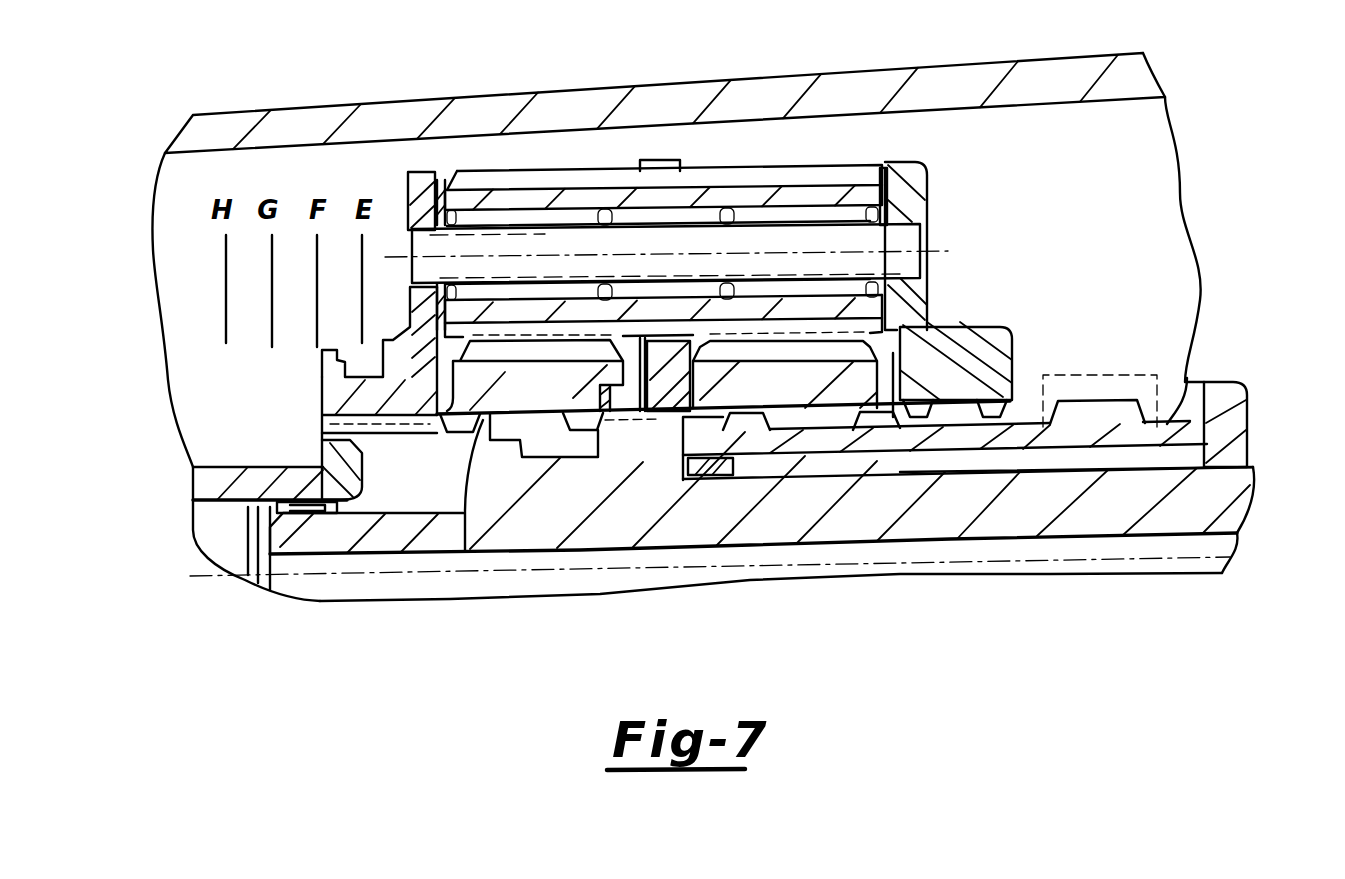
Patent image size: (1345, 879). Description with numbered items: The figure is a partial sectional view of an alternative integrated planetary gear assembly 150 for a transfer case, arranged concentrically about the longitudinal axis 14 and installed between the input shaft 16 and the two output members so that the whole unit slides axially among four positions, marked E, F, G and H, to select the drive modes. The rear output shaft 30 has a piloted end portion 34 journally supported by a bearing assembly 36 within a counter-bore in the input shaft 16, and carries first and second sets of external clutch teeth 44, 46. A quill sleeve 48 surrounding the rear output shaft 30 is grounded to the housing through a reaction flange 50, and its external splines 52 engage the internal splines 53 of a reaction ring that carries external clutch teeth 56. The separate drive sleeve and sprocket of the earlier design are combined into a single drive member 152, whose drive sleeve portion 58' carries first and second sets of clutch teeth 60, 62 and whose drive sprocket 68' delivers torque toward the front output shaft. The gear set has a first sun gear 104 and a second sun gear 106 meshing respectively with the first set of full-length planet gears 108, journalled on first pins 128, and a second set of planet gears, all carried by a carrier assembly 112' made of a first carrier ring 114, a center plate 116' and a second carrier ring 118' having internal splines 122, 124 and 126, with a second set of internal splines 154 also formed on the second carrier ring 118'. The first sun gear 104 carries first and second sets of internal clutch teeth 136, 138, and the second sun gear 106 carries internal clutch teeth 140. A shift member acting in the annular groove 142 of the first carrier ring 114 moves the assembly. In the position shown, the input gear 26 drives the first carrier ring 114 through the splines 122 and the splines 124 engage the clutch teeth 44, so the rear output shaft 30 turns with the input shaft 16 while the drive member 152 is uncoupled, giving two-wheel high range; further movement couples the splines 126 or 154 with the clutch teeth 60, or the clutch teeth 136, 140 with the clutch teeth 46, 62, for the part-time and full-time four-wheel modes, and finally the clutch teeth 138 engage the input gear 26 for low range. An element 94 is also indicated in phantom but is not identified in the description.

The longitudinal axis 14 is at (1222, 580).
The input shaft 16 is at (195, 480).
The input gear 26 is at (325, 437).
The rear output shaft 30 is at (667, 550).
The piloted end portion 34 is at (303, 540).
The bearing assembly 36 is at (316, 518).
The first set of external clutch teeth 44 is at (630, 423).
The second set of external clutch teeth 46 is at (502, 433).
The quill sleeve 48 is at (893, 450).
The reaction flange 50 is at (1192, 427).
The external splines 52 is at (742, 430).
The internal splines 53 is at (687, 427).
The external clutch teeth 56 is at (712, 428).
The drive sleeve portion 58' is at (1228, 460).
The first set of external clutch teeth 60 is at (993, 432).
The second set of external clutch teeth 62 is at (757, 431).
The drive sprocket 68' is at (1157, 369).
The phantom member 94 is at (1100, 392).
The first sun gear 104 is at (568, 374).
The second sun gear 106 is at (785, 374).
The first set of full-length planet gears 108 is at (900, 162).
The carrier assembly 112' is at (662, 225).
The first carrier ring 114 is at (416, 174).
The center plate 116' is at (696, 148).
The second carrier ring 118' is at (958, 245).
The internal splines 122 is at (392, 425).
The internal splines 124 is at (710, 430).
The first set of internal splines 126 is at (915, 393).
The first pins 128 is at (805, 248).
The first set of internal clutch teeth 136 is at (577, 425).
The second set of internal clutch teeth 138 is at (453, 414).
The internal clutch teeth 140 is at (887, 417).
The annular groove 142 is at (322, 356).
The integrated planetary gear assembly 150 is at (778, 152).
The drive member 152 is at (1077, 447).
The second set of internal splines 154 is at (990, 410).